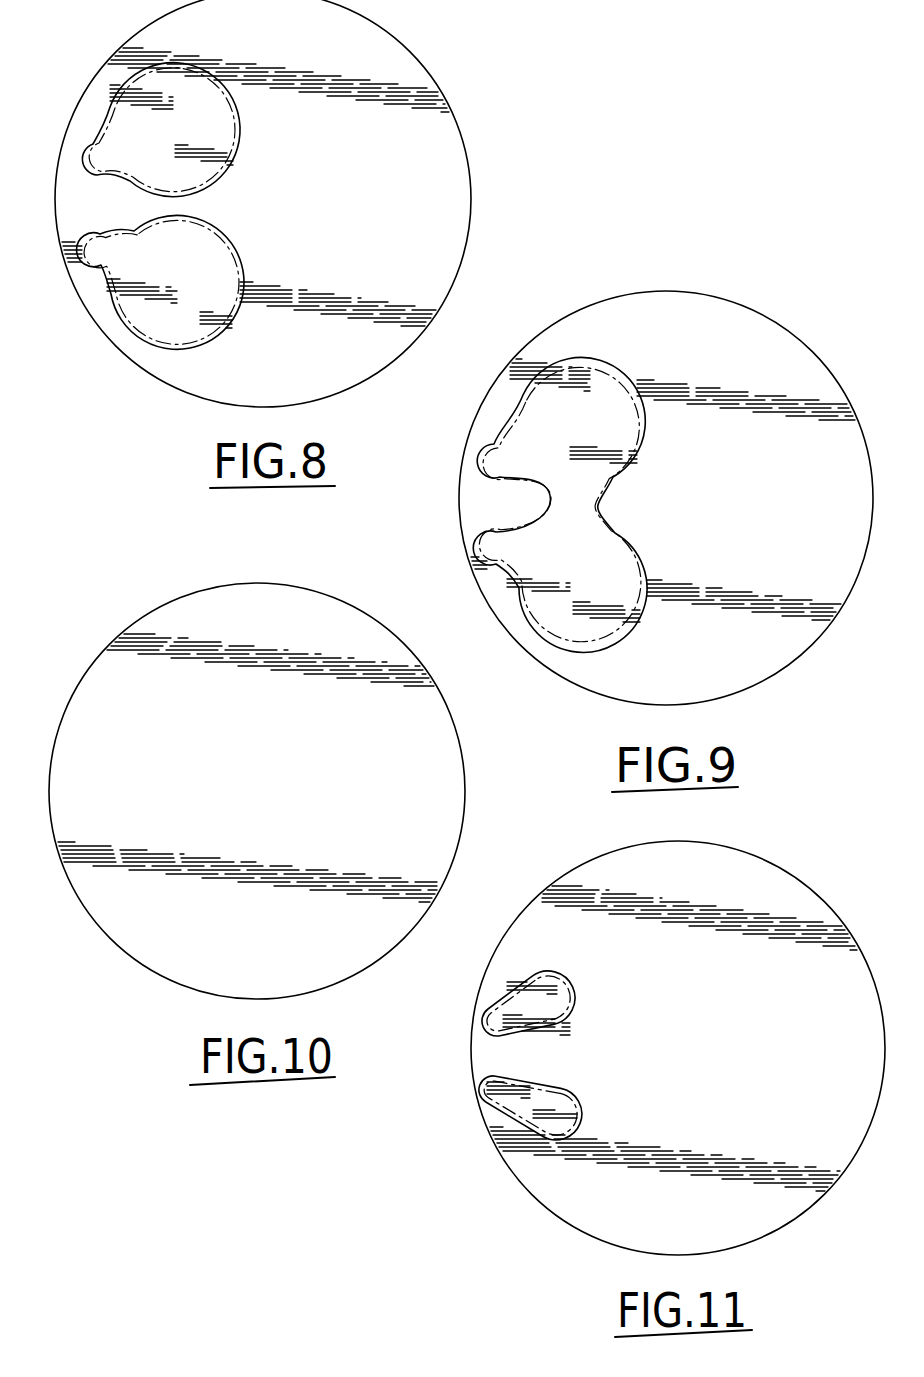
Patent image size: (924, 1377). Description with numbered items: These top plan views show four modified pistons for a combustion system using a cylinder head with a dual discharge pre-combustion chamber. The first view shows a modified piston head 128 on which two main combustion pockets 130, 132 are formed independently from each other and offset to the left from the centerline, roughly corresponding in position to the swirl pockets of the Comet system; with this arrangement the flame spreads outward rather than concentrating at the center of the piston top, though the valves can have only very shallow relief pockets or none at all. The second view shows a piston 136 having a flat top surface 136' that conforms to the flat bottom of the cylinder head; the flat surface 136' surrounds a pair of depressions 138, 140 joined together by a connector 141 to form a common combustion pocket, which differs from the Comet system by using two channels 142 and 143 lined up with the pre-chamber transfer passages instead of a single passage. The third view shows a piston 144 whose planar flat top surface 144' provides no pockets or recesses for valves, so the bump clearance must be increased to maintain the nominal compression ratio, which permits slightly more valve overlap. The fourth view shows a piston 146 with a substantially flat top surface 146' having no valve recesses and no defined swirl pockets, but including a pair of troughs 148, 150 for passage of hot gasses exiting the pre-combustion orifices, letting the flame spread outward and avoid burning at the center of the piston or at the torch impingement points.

In FIG. 8, the piston head 128 is at (472, 167).
In FIG. 8, the main combustion pocket 130 is at (152, 347).
In FIG. 8, the main combustion pocket 132 is at (228, 97).
In FIG. 9, the piston 136 is at (630, 498).
In FIG. 9, the flat top surface 136' is at (663, 490).
In FIG. 9, the depression 138 is at (610, 552).
In FIG. 9, the depression 140 is at (607, 395).
In FIG. 9, the connector 141 is at (582, 498).
In FIG. 9, the channel 142 is at (512, 537).
In FIG. 9, the channel 143 is at (490, 458).
In FIG. 10, the piston 144 is at (296, 791).
In FIG. 10, the flat top surface 144' is at (247, 768).
In FIG. 11, the piston 146 is at (678, 1048).
In FIG. 11, the flat top surface 146' is at (672, 1038).
In FIG. 11, the trough 148 is at (548, 1084).
In FIG. 11, the trough 150 is at (561, 992).